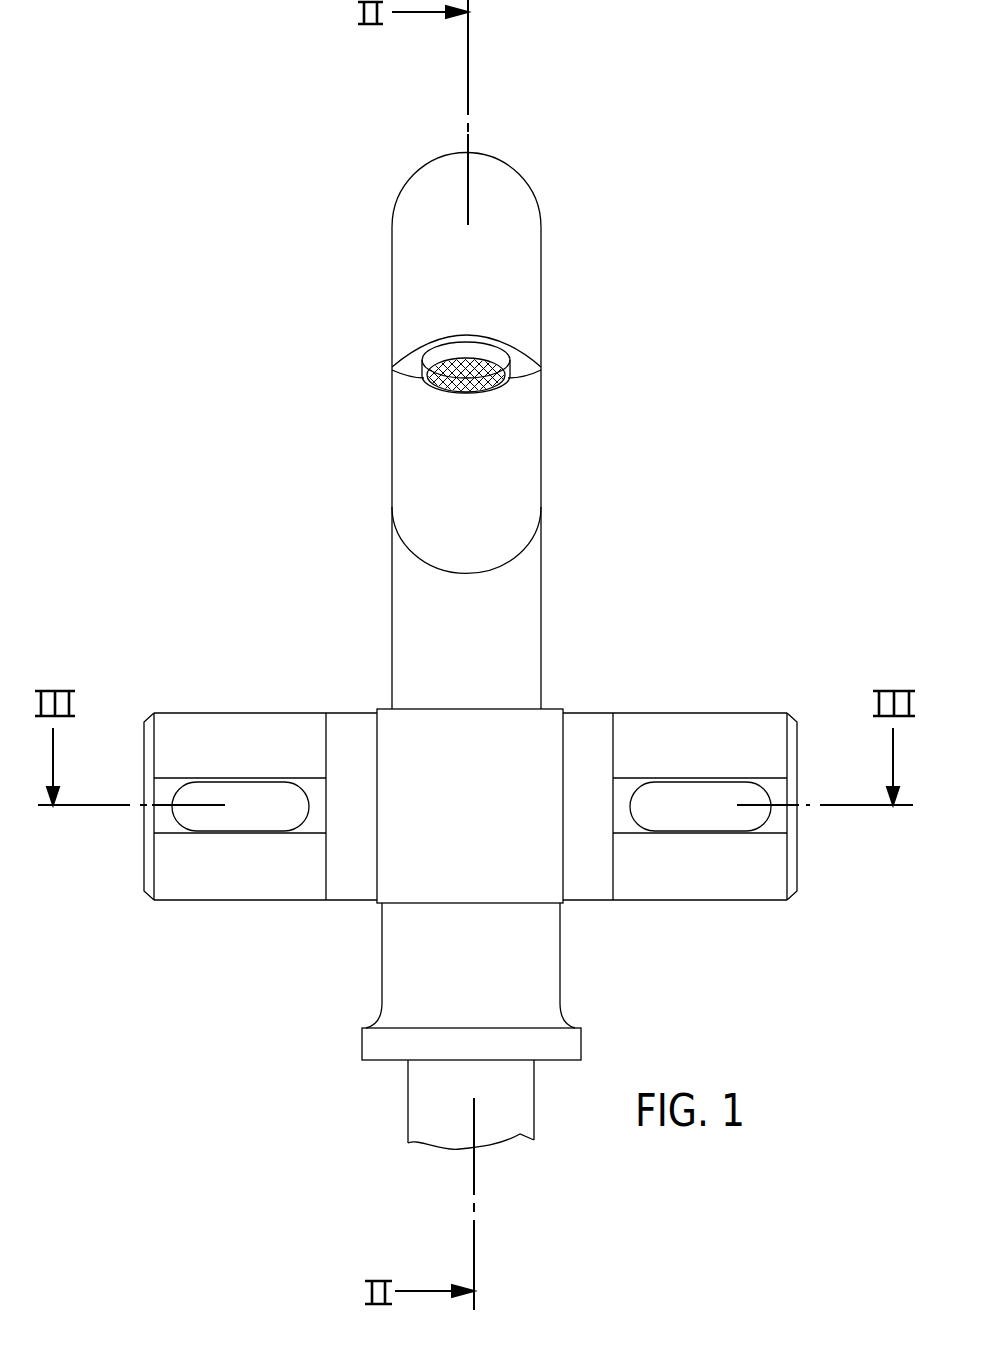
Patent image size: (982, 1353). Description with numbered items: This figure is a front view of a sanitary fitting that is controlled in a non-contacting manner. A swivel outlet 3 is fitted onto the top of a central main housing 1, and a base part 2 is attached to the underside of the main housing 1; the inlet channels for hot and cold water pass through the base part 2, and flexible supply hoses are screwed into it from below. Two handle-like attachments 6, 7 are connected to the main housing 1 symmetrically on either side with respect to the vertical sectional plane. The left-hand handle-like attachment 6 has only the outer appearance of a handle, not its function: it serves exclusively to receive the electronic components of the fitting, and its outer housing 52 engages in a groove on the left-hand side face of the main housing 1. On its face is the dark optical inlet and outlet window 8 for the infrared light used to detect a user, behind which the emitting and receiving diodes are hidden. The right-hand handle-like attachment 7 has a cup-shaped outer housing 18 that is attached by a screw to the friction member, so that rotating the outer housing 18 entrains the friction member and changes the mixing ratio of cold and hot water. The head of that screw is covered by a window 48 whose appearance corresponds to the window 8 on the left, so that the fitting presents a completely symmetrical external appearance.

The main housing 1 is at (418, 766).
The base part 2 is at (514, 1130).
The swivel outlet 3 is at (502, 470).
The handle-like attachment 6 is at (249, 738).
The handle-like attachment 7 is at (690, 738).
The optical inlet and outlet window 8 is at (237, 823).
The outer housing 18 is at (762, 735).
The window 48 is at (705, 818).
The outer housing 52 is at (167, 737).